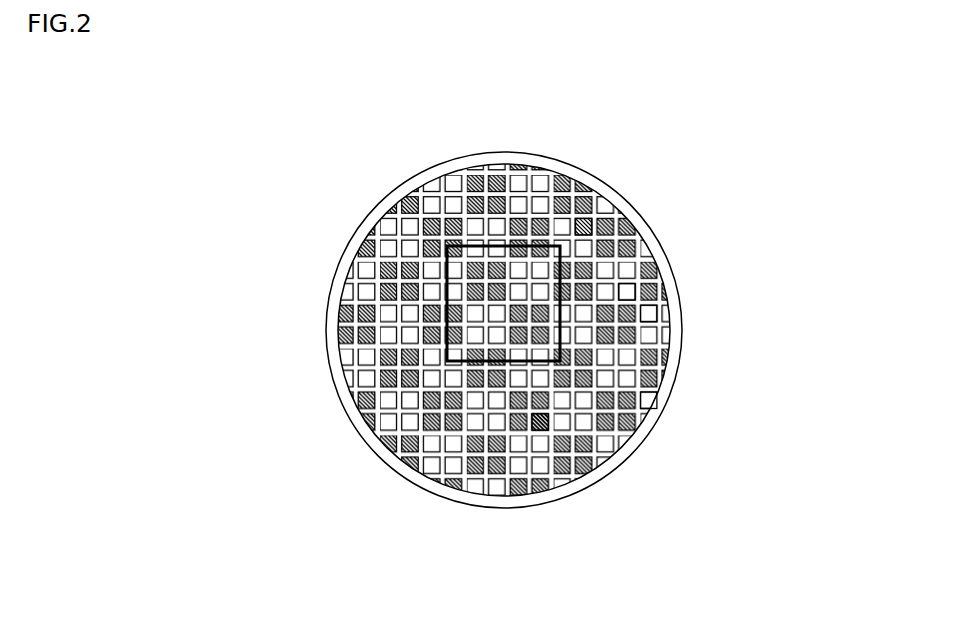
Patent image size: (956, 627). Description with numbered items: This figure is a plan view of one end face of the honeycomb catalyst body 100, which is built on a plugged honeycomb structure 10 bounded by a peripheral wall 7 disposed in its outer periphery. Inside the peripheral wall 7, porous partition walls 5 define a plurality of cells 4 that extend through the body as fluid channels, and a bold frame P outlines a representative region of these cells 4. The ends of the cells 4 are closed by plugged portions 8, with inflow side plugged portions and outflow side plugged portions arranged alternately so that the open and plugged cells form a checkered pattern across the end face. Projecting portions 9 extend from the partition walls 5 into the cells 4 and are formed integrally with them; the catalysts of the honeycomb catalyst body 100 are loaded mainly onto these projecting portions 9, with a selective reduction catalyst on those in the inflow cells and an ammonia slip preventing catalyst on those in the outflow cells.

The honeycomb catalyst body 100 is at (846, 116).
The plugged honeycomb structure 10 is at (681, 377).
The peripheral wall 7 is at (529, 161).
The pixel block P is at (447, 293).
The cells 4 is at (588, 226).
The projecting portions 9 is at (625, 285).
The partition walls 5 is at (644, 314).
The plugged portions 8 is at (549, 424).